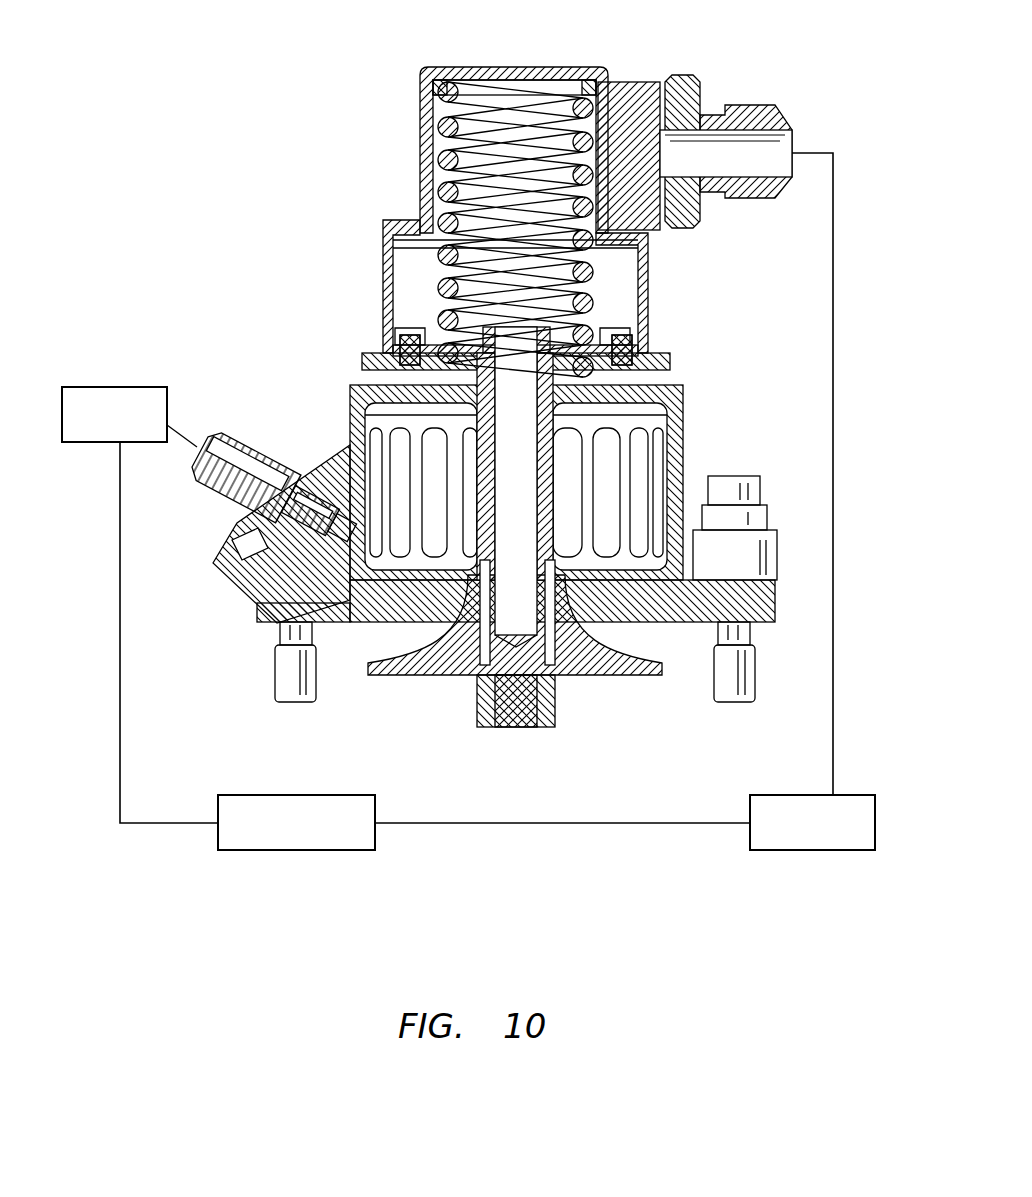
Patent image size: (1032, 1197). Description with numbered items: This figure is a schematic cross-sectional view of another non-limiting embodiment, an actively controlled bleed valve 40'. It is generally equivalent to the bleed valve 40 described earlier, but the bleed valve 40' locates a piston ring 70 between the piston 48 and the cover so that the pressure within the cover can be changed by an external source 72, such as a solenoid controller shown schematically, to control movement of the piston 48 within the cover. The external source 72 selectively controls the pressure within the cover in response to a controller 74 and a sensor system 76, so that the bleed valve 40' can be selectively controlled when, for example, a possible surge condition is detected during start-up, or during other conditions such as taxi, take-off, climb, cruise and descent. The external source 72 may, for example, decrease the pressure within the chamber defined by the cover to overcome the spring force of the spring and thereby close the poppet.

The bleed valve 40' is at (650, 136).
The bleed valve 40 is at (517, 473).
The piston 48 is at (612, 336).
The piston ring 70 is at (640, 345).
The external source 72 is at (800, 850).
The controller 74 is at (348, 850).
The sensor system 76 is at (148, 386).